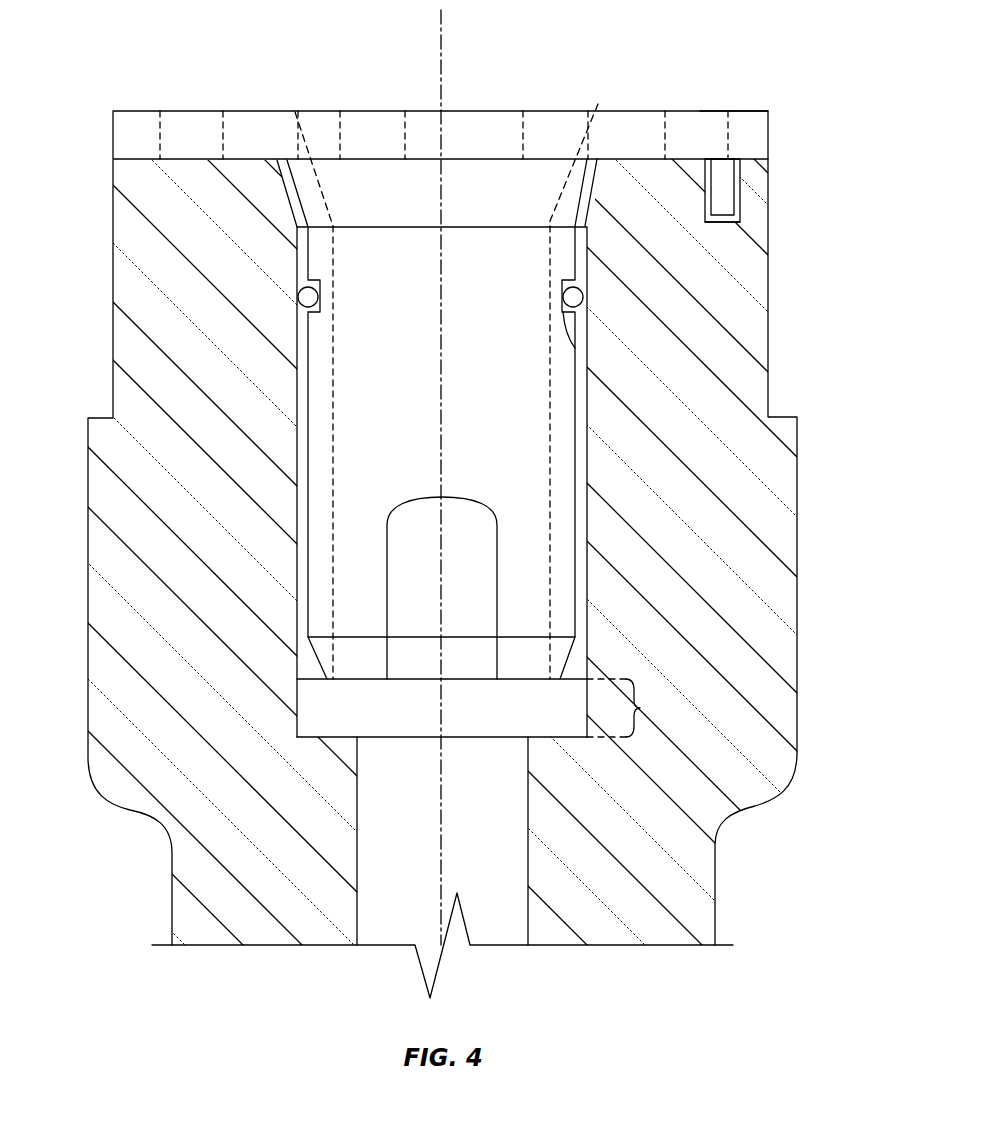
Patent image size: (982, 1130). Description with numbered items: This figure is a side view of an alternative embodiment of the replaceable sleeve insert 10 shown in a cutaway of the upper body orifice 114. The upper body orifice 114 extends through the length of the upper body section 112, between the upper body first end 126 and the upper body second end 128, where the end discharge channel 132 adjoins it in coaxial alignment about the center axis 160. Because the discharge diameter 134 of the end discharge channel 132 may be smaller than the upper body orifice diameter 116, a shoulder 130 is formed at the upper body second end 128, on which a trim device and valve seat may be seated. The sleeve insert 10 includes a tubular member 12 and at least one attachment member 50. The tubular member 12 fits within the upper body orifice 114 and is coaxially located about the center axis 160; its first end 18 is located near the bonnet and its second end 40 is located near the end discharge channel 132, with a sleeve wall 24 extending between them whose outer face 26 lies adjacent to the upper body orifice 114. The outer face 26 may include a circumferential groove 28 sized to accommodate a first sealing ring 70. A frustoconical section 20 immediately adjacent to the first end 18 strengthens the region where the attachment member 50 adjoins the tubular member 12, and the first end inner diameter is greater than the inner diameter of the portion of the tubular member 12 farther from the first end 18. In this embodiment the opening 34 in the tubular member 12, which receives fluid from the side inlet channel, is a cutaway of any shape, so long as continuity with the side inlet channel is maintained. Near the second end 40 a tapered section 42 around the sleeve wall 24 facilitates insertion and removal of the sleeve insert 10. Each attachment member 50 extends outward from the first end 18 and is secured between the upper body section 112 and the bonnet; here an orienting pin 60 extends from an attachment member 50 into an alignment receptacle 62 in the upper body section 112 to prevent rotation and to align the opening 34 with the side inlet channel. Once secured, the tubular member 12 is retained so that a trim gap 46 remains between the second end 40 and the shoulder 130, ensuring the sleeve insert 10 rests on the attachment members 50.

The replaceable sleeve insert 10 is at (660, 111).
The tubular member 12 is at (563, 433).
The first end 18 is at (598, 110).
The frustoconical section 20 is at (575, 188).
The sleeve wall 24 is at (563, 510).
The outer face 26 is at (441, 452).
The circumferential groove 28 is at (578, 335).
The opening 34 is at (385, 590).
The second end 40 is at (338, 690).
The tapered section 42 is at (318, 665).
The trim gap 46 is at (629, 708).
The attachment member 50 is at (748, 111).
The orienting pin 60 is at (722, 190).
The alignment receptacle 62 is at (740, 220).
The first sealing ring 70 is at (577, 302).
The upper body section 112 is at (755, 340).
The upper body orifice 114 is at (442, 720).
The upper body orifice diameter 116 is at (298, 698).
The upper body first end 126 is at (130, 160).
The upper body second end 128 is at (660, 750).
The shoulder 130 is at (310, 727).
The end discharge channel 132 is at (498, 870).
The discharge diameter 134 is at (528, 818).
The center axis 160 is at (440, 60).